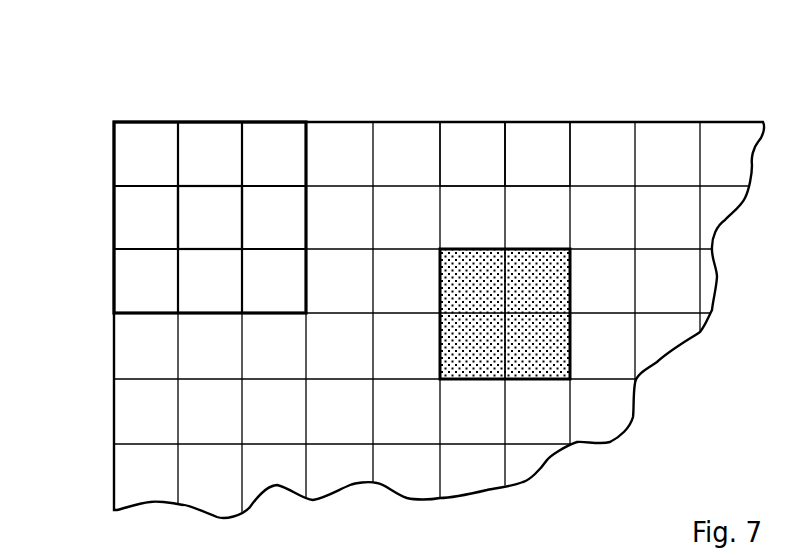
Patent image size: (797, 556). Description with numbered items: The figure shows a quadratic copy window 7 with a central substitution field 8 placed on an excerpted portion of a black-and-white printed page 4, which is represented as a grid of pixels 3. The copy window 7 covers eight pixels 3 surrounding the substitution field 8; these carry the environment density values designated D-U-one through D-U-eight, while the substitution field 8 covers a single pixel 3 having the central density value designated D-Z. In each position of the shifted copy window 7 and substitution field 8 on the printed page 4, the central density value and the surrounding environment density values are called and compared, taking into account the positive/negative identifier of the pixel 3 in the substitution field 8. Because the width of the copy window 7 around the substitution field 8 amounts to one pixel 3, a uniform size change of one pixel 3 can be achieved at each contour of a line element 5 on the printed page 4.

The pixel 3 is at (540, 152).
The printed page 4 is at (408, 121).
The line element 5 is at (573, 348).
The copy window 7 is at (188, 121).
The substitution field 8 is at (176, 230).